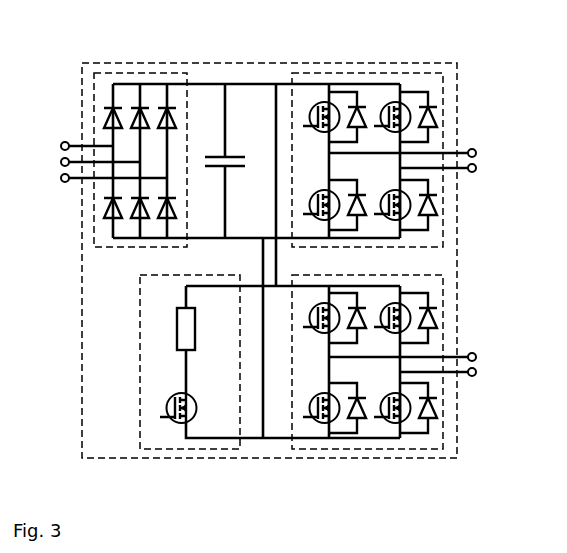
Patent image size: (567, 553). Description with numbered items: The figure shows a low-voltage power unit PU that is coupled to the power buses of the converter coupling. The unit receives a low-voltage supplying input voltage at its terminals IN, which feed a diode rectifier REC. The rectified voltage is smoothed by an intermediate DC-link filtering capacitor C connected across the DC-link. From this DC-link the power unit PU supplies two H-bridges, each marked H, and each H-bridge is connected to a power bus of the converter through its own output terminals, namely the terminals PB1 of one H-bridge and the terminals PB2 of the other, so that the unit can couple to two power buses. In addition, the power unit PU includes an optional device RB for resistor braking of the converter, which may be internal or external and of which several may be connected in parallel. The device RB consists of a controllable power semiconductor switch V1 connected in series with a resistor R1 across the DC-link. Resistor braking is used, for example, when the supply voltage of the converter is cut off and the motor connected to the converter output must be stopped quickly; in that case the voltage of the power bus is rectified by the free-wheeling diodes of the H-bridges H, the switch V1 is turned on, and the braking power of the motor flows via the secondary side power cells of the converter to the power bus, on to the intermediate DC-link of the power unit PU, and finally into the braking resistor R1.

The low-voltage power unit PU is at (461, 52).
The diode rectifier REC is at (153, 73).
The terminals for a low-voltage supplying input voltage IN is at (97, 162).
The intermediate DC-link filtering capacitor C is at (224, 161).
The H-bridge H is at (333, 71).
The terminals of the first H-bridge PB1 is at (424, 160).
The terminals of the second H-bridge PB2 is at (424, 364).
The optional device for resistor braking RB is at (163, 452).
The resistor R1 is at (170, 329).
The controllable power semiconductor switch V1 is at (171, 397).